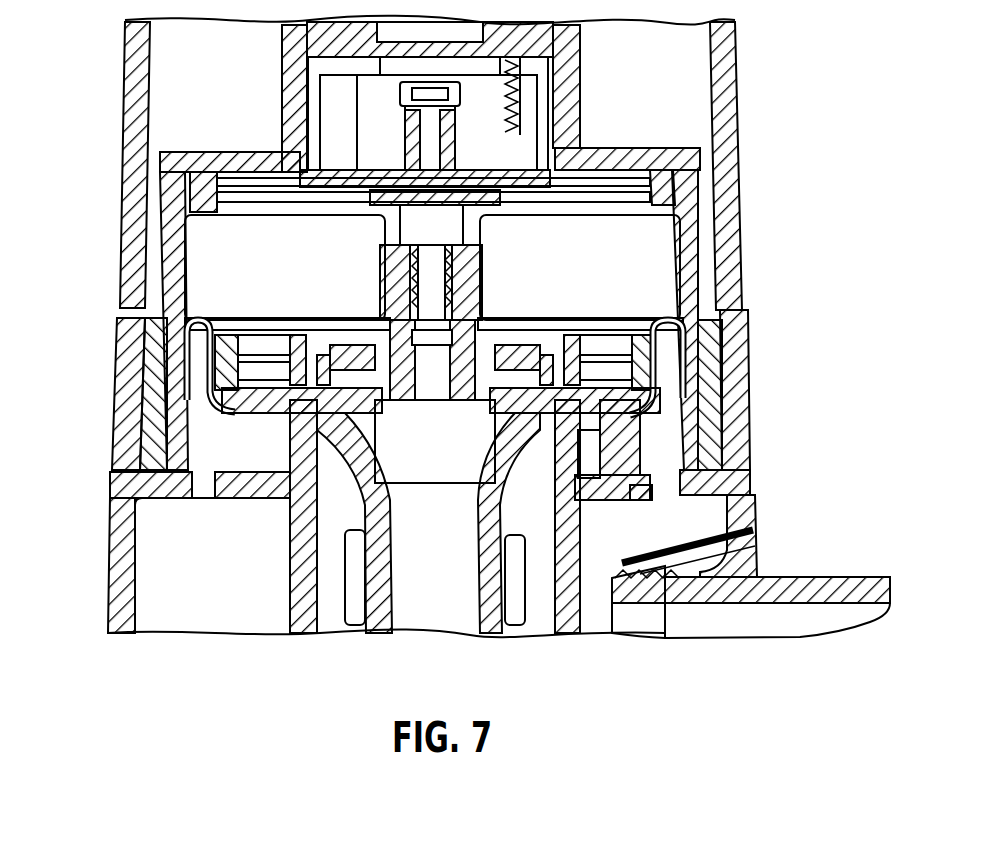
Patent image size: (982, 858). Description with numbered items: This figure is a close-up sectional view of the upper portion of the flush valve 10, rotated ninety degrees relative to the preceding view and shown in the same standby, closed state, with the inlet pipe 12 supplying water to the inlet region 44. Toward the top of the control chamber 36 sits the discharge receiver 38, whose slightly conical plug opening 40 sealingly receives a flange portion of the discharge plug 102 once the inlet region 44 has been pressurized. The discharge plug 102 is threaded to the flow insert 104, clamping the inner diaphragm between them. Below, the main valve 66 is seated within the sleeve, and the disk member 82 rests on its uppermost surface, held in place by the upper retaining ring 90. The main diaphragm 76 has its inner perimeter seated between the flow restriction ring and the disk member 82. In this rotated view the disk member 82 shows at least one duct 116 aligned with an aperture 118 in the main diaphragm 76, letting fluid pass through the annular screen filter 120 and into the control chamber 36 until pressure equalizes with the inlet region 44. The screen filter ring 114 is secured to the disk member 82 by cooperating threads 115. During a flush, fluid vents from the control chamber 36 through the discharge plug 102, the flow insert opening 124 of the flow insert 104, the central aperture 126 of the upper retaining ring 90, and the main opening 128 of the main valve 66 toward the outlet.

The flush valve 10 is at (98, 224).
The inlet pipe 12 is at (818, 577).
The control chamber 36 is at (700, 226).
The discharge receiver 38 is at (572, 160).
The plug opening 40 is at (565, 210).
The inlet region 44 is at (153, 608).
The main valve 66 is at (492, 585).
The main diaphragm 76 is at (745, 416).
The disk member 82 is at (728, 446).
The upper retaining ring 90 is at (378, 407).
The discharge plug 102 is at (495, 232).
The flow insert 104 is at (395, 350).
The screen filter ring 114 is at (595, 338).
The cooperating threads 115 is at (228, 340).
The duct 116 is at (742, 386).
The aperture 118 is at (600, 430).
The annular screen filter 120 is at (612, 345).
The flow insert opening 124 is at (405, 240).
The central aperture 126 is at (388, 465).
The main opening 128 is at (398, 595).